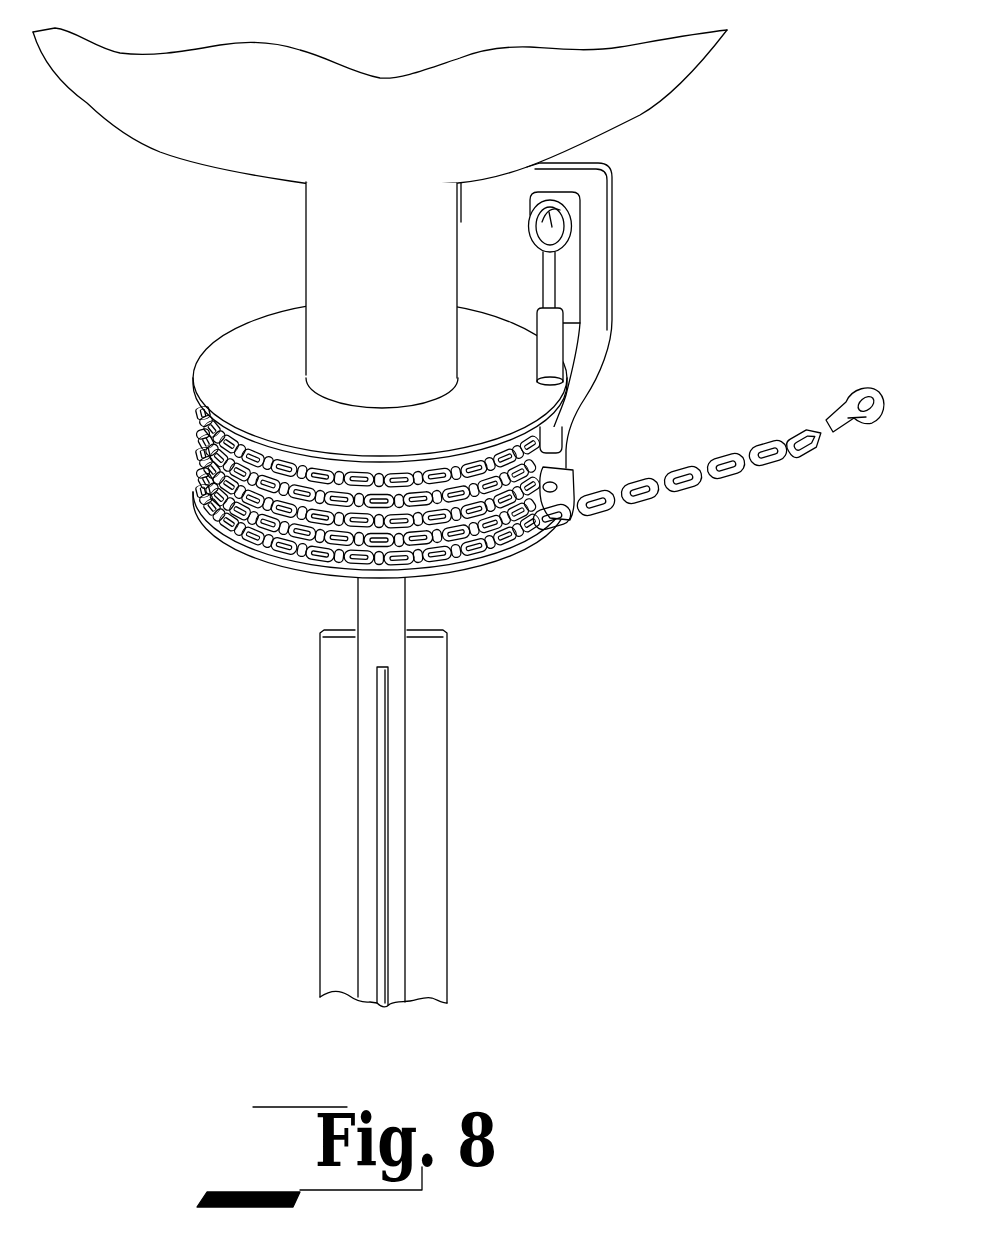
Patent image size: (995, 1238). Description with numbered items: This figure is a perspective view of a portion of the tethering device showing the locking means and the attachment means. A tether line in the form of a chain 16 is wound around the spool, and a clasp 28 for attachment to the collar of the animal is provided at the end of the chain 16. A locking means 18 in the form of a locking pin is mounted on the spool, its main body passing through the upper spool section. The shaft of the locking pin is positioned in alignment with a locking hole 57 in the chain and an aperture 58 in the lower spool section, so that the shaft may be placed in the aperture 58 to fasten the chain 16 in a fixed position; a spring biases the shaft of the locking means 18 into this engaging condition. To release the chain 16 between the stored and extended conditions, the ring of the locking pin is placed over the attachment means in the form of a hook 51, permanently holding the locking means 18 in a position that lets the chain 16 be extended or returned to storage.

The chain 16 is at (197, 485).
The locking means 18 is at (575, 319).
The hook 51 is at (440, 222).
The aperture 58 is at (573, 468).
The locking hole 57 is at (567, 507).
The clasp 28 is at (877, 424).